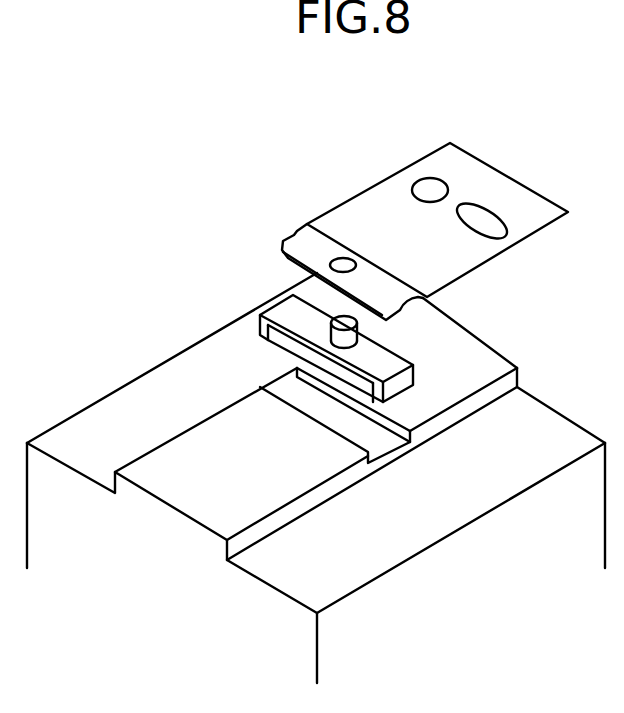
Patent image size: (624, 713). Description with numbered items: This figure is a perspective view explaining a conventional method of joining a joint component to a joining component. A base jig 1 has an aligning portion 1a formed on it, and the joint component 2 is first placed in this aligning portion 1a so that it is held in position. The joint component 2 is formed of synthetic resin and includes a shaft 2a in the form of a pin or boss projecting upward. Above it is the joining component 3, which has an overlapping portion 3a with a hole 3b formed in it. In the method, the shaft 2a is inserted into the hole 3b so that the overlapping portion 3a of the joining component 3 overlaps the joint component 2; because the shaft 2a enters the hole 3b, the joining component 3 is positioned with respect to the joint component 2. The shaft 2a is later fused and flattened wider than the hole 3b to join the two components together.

The base jig 1 is at (170, 348).
The aligning portion 1a is at (372, 440).
The joint component 2 is at (398, 345).
The shaft 2a is at (340, 338).
The joining component 3 is at (420, 153).
The overlapping portion 3a is at (377, 283).
The hole 3b is at (347, 258).